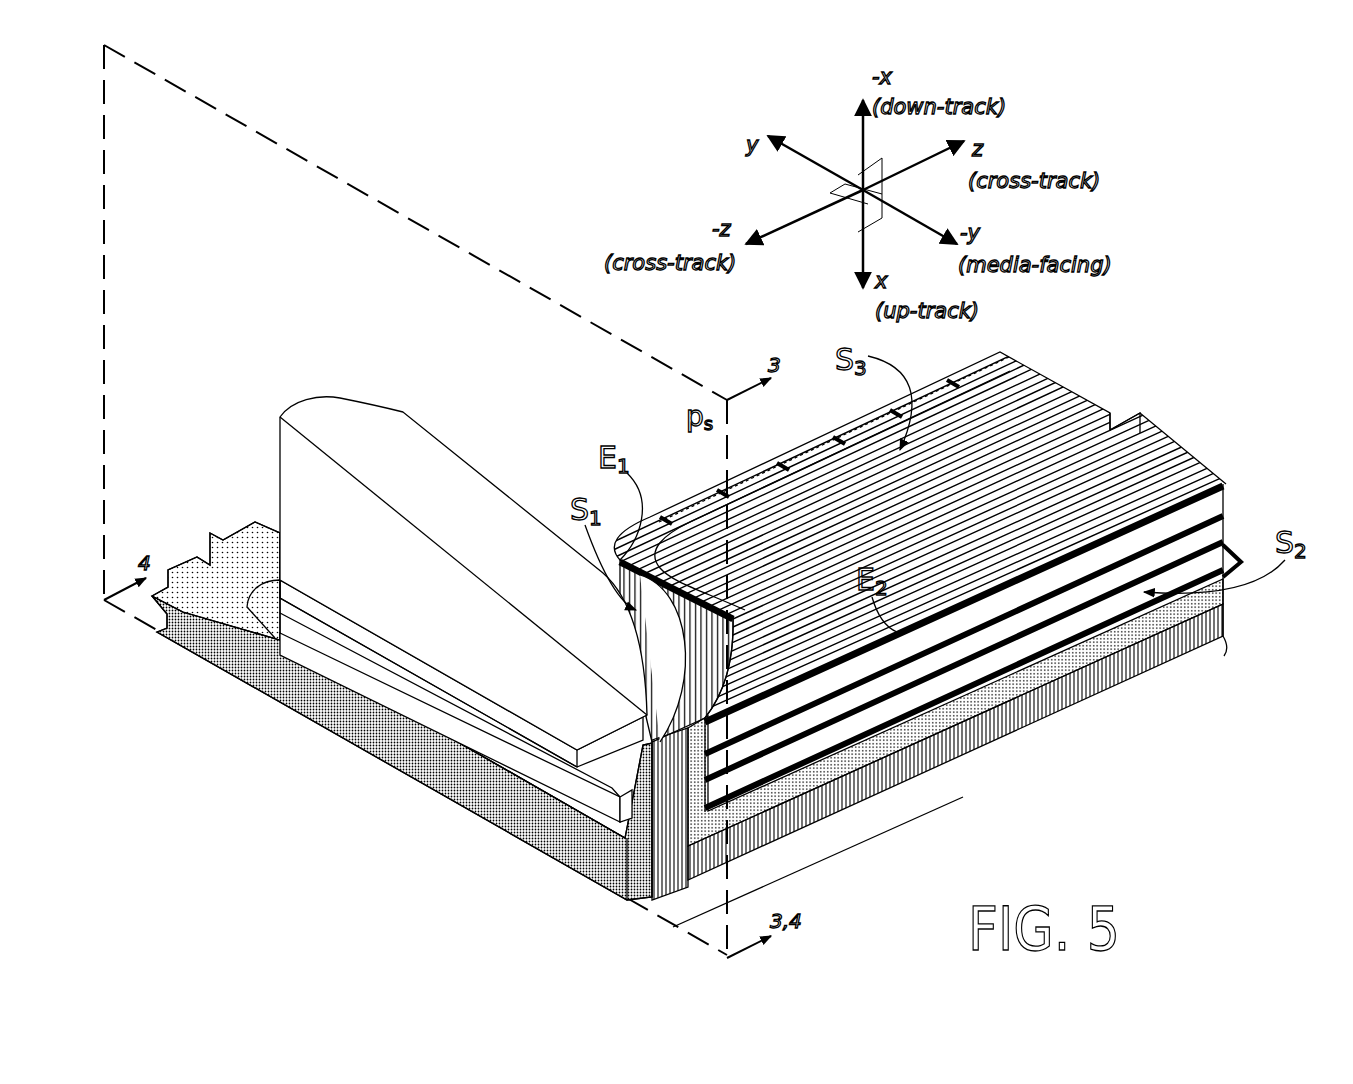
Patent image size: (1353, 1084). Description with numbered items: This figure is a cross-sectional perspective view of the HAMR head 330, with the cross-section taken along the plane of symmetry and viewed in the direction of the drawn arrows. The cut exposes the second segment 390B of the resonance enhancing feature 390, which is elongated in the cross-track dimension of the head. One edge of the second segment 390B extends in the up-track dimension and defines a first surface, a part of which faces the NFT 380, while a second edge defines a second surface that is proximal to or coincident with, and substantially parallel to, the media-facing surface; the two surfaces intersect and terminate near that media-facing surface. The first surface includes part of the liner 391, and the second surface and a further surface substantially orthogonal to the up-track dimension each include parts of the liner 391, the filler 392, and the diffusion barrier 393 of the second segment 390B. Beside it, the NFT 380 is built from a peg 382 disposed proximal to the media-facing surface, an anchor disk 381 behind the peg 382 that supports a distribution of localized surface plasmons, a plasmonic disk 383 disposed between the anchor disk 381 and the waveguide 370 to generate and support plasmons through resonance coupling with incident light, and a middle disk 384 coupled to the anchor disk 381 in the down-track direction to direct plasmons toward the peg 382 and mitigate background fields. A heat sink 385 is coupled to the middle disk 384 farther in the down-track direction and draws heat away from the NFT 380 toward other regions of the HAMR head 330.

The HAMR head 330 is at (428, 132).
The waveguide 370 is at (402, 748).
The NFT 380 is at (250, 598).
The anchor disk 381 is at (465, 731).
The peg 382 is at (613, 811).
The plasmonic disk 383 is at (305, 655).
The middle disk 384 is at (410, 675).
The heat sink 385 is at (463, 573).
The resonance enhancing feature 390 is at (1228, 645).
The second segment 390B is at (1080, 386).
The liner 391 is at (972, 378).
The filler 392 is at (905, 509).
The diffusion barrier 393 is at (767, 488).